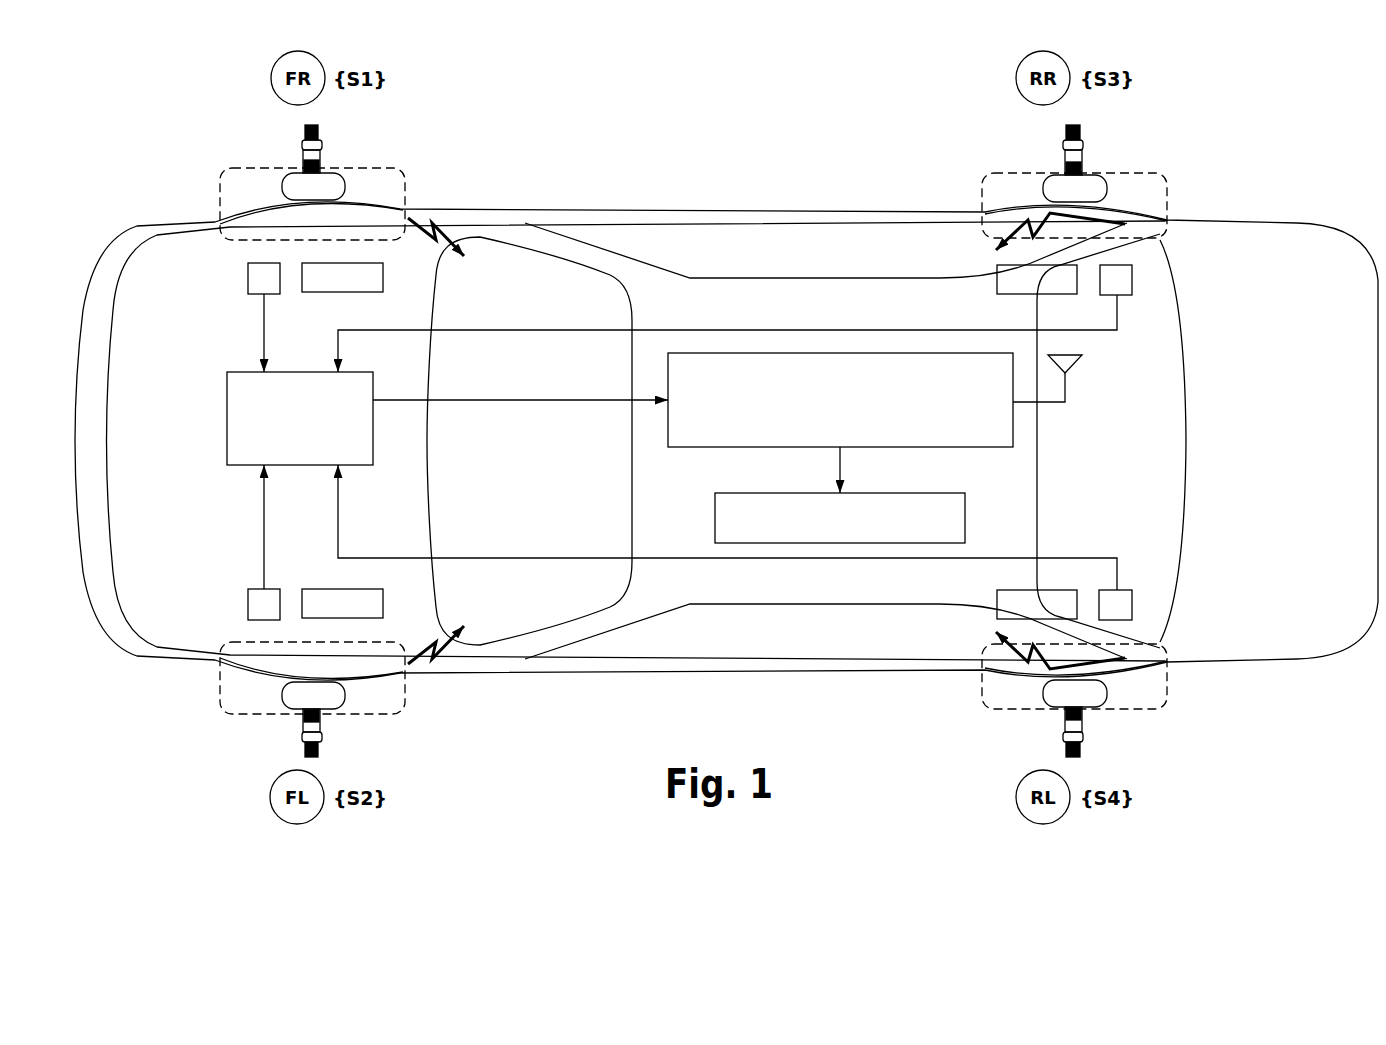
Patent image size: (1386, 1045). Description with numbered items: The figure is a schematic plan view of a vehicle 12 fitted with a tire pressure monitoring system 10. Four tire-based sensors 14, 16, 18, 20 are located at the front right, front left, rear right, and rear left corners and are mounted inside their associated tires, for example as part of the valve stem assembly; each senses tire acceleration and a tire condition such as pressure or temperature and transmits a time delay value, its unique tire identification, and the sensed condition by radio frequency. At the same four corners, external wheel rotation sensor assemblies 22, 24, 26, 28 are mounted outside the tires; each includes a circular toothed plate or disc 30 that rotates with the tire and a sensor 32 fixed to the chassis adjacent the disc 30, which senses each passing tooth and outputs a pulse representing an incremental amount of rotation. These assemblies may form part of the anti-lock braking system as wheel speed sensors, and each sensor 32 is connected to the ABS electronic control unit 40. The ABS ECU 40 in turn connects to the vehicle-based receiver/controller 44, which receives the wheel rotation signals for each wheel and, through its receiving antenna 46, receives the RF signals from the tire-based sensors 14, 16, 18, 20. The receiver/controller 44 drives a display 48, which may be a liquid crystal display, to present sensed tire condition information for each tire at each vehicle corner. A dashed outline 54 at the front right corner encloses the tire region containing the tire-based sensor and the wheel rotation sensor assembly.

The tire pressure monitoring system 10 is at (1216, 88).
The vehicle 12 is at (1300, 222).
The tire-based sensor 14 is at (314, 158).
The tire-based sensor 16 is at (287, 694).
The tire-based sensor 18 is at (1100, 190).
The tire-based sensor 20 is at (1092, 697).
The wheel rotation sensor assembly 22 is at (262, 200).
The wheel rotation sensor assembly 24 is at (232, 632).
The wheel rotation sensor assembly 26 is at (1133, 342).
The wheel rotation sensor assembly 28 is at (1138, 565).
The circular toothed plate or disc 30 is at (347, 291).
The sensor 32 is at (247, 278).
The ABS electronic control unit 40 is at (227, 397).
The vehicle-based receiver/controller 44 is at (1013, 423).
The receiving antenna 46 is at (1080, 367).
The display 48 is at (967, 527).
The tire and wheel assembly 54 is at (408, 180).